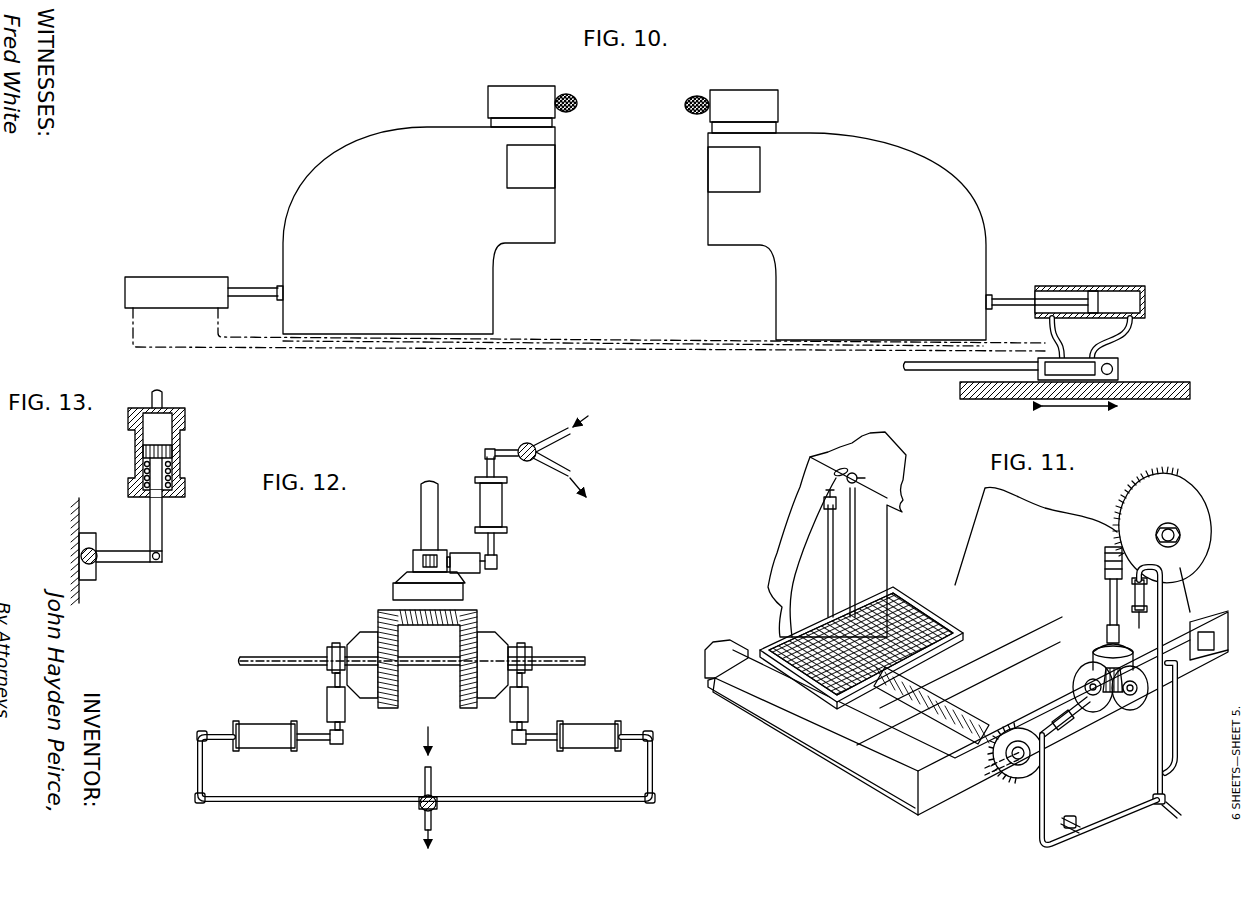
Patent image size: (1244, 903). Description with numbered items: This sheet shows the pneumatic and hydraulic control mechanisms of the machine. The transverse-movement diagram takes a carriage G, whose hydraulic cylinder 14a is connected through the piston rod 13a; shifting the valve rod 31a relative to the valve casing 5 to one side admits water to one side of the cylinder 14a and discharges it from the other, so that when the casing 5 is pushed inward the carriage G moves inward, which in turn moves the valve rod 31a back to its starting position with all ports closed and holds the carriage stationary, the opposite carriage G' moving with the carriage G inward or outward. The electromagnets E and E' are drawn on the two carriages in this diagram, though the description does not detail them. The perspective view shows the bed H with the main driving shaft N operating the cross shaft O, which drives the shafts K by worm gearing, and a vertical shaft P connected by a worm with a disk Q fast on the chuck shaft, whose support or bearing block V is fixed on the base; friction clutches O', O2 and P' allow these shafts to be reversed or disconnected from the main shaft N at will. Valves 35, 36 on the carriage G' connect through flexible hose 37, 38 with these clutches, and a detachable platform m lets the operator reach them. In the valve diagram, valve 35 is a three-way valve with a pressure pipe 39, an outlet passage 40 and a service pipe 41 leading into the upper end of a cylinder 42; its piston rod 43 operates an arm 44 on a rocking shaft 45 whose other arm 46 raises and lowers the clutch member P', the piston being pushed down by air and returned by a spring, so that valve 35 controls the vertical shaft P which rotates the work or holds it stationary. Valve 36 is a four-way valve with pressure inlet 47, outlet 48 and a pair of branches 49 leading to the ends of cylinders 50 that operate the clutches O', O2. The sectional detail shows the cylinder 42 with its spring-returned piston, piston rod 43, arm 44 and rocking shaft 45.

In FIG. 10, the hydraulic cylinder 14a is at (192, 272).
In FIG. 10, the piston rod 13a is at (259, 290).
In FIG. 10, the electromagnet E is at (721, 141).
In FIG. 10, the electromagnet E' is at (537, 137).
In FIG. 10, the carriage G is at (847, 236).
In FIG. 10, the carriage G' is at (419, 230).
In FIG. 11, the carriage G' is at (837, 534).
In FIG. 10, the valve casing 5 is at (1120, 369).
In FIG. 10, the valve rod 31a is at (905, 371).
In FIG. 13, the service pipe 41 is at (163, 404).
In FIG. 12, the service pipe 41 is at (518, 448).
In FIG. 13, the cylinder 42 is at (128, 453).
In FIG. 12, the cylinder 42 is at (480, 505).
In FIG. 11, the cylinder 42 is at (1146, 598).
In FIG. 13, the piston rod 43 is at (150, 523).
In FIG. 12, the piston rod 43 is at (508, 543).
In FIG. 13, the arm 44 is at (126, 564).
In FIG. 12, the arm 44 is at (497, 558).
In FIG. 13, the rocking shaft 45 is at (79, 554).
In FIG. 12, the rocking shaft 45 is at (470, 575).
In FIG. 12, the arm 46 is at (413, 562).
In FIG. 13, the support or bearing block V is at (76, 513).
In FIG. 11, the support or bearing block V is at (1072, 549).
In FIG. 12, the vertical shaft P is at (406, 515).
In FIG. 11, the vertical shaft P is at (1090, 595).
In FIG. 12, the friction clutch P' is at (405, 588).
In FIG. 12, the cross shaft O is at (412, 648).
In FIG. 11, the cross shaft O is at (1102, 683).
In FIG. 12, the friction clutch O2 is at (364, 634).
In FIG. 12, the friction clutch O' is at (504, 656).
In FIG. 12, the valve 35 is at (509, 476).
In FIG. 11, the valve 35 is at (862, 478).
In FIG. 12, the valve 36 is at (437, 799).
In FIG. 11, the valve 36 is at (814, 513).
In FIG. 11, the flexible hose 37 is at (826, 560).
In FIG. 11, the flexible hose 38 is at (856, 565).
In FIG. 12, the pressure pipe 39 is at (560, 440).
In FIG. 11, the pressure pipe 39 is at (1167, 692).
In FIG. 12, the outlet passage 40 is at (558, 488).
In FIG. 12, the pressure inlet 47 is at (423, 790).
In FIG. 12, the outlet 48 is at (442, 829).
In FIG. 12, the branches 49 is at (515, 808).
In FIG. 11, the branches 49 is at (1118, 805).
In FIG. 12, the cylinders 50 is at (592, 730).
In FIG. 11, the cylinders 50 is at (1072, 728).
In FIG. 11, the platform m is at (861, 648).
In FIG. 11, the shafts K is at (955, 690).
In FIG. 11, the disk Q is at (1165, 528).
In FIG. 11, the main driving shaft N is at (1110, 694).
In FIG. 11, the bed frame H is at (966, 713).